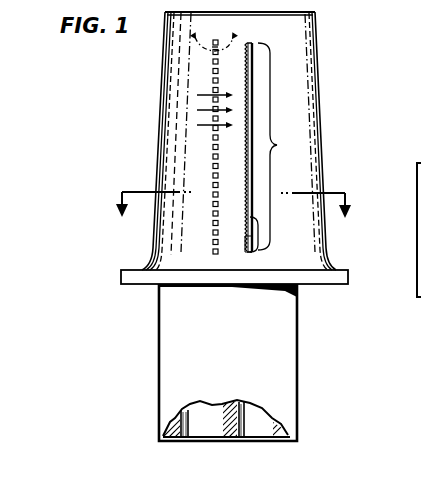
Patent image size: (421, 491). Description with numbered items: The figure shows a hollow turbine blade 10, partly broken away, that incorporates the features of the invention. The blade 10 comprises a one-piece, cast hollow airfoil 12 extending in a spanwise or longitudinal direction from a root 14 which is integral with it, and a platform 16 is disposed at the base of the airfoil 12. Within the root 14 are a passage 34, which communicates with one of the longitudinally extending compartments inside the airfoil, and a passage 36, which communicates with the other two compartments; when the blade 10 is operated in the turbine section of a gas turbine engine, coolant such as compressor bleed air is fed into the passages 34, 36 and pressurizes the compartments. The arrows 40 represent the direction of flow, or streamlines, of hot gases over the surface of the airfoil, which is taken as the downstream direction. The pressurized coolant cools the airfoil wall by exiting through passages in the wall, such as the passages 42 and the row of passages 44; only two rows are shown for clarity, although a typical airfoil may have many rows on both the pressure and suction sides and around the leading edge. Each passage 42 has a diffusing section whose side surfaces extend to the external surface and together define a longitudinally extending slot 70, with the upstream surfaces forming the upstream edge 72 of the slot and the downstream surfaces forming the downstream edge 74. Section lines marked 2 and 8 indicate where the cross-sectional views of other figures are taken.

The turbine blade 10 is at (322, 32).
The airfoil 12 is at (305, 97).
The root 14 is at (238, 361).
The platform 16 is at (123, 281).
The passage 34 is at (186, 440).
The passage 36 is at (242, 440).
The arrows 40 is at (203, 110).
The passages 42 is at (247, 108).
The passages 44 is at (217, 64).
The slot 70 is at (277, 146).
The upstream edge 72 is at (245, 241).
The downstream edge 74 is at (264, 234).
The section line 8- 8 is at (213, 34).
The section line 2- 2 is at (233, 216).